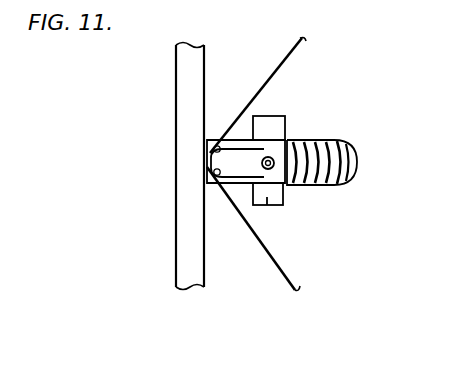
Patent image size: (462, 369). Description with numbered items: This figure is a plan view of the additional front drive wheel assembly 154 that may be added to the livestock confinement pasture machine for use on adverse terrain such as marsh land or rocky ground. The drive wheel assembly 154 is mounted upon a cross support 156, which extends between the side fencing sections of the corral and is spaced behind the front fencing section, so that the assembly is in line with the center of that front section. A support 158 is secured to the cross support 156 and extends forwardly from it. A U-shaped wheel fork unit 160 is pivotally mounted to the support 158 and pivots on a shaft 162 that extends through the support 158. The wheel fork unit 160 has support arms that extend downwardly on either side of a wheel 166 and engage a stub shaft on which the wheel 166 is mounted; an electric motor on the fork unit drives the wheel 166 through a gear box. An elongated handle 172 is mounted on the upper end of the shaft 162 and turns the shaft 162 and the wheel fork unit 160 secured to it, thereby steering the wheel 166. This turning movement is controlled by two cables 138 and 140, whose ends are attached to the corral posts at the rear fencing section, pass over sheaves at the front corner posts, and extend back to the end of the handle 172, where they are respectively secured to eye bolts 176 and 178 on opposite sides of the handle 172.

The cable 138 is at (286, 278).
The cable 140 is at (275, 70).
The drive wheel assembly 154 is at (355, 160).
The cross support 156 is at (187, 96).
The support 158 is at (285, 186).
The wheel fork unit 160 is at (267, 205).
The shaft 162 is at (287, 139).
The wheel 166 is at (327, 142).
The handle 172 is at (243, 158).
The eye bolt 176 is at (212, 149).
The eye bolt 178 is at (213, 172).